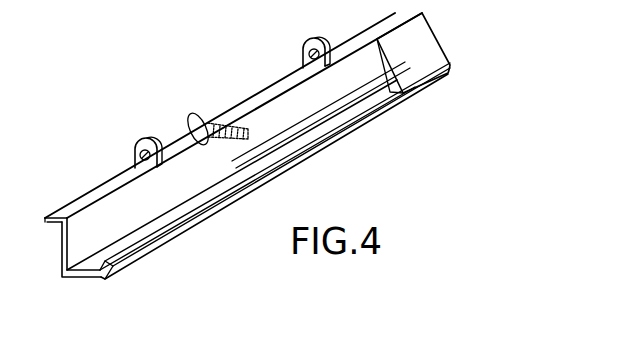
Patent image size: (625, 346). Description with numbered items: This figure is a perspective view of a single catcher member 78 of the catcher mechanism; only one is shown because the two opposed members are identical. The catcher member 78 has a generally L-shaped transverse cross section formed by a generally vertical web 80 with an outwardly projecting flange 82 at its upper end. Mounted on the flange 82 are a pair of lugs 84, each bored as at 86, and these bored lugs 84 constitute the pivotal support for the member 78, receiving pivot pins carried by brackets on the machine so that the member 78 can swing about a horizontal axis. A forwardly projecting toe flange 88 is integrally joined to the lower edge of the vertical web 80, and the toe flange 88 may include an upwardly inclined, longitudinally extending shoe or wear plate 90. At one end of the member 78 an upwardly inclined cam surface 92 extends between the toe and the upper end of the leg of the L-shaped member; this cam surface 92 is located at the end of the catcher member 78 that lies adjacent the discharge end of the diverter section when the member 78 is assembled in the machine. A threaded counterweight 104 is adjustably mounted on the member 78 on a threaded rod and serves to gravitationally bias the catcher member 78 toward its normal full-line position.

The catcher member 78 is at (246, 96).
The vertical web 80 is at (242, 150).
The flange 82 is at (93, 190).
The lugs 84 is at (164, 126).
The bore 86 is at (136, 156).
The toe flange 88 is at (80, 278).
The shoe or wear plate 90 is at (192, 217).
The cam surface 92 is at (420, 46).
The threaded counterweight 104 is at (197, 114).